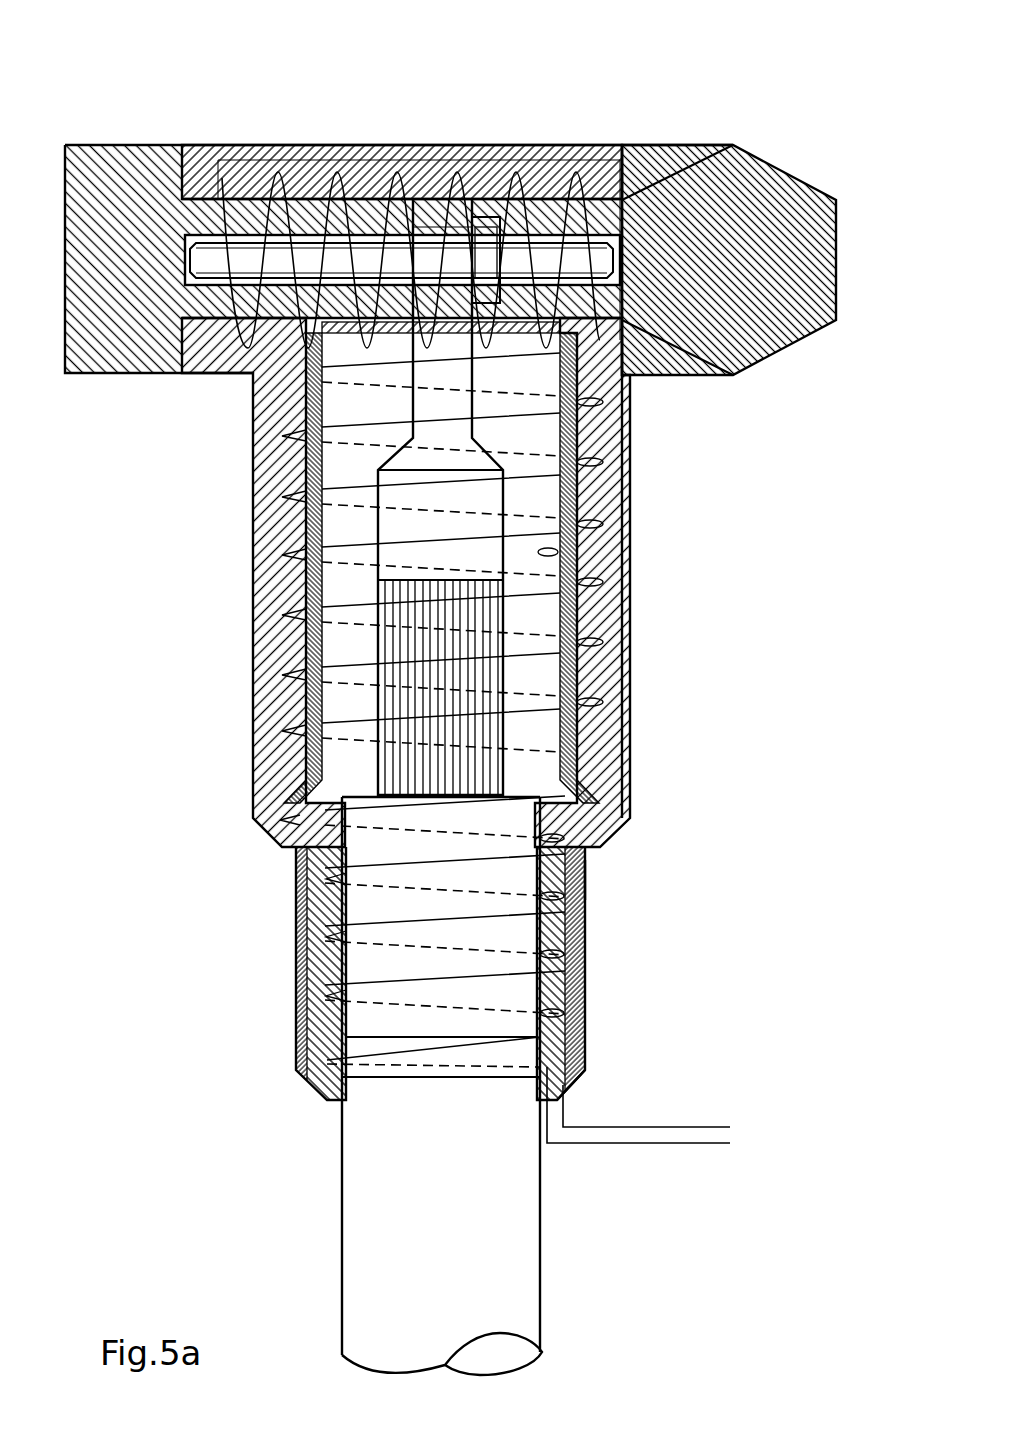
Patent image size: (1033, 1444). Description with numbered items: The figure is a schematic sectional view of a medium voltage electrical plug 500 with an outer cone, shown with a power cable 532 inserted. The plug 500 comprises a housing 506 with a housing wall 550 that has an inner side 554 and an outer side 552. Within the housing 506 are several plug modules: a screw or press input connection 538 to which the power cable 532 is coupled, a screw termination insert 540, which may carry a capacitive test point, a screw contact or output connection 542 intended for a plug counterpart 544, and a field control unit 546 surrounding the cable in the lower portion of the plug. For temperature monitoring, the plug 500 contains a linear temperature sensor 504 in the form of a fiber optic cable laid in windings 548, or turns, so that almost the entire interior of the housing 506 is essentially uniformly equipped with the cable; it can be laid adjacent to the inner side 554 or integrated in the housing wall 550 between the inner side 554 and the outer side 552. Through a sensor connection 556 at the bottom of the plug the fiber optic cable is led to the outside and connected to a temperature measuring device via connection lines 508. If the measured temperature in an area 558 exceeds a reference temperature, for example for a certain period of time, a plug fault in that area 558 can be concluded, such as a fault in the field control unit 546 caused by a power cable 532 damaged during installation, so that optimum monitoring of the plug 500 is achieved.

The electrical plug 500 is at (92, 84).
The linear temperature sensor 504 is at (300, 988).
The housing 506 is at (612, 735).
The connection lines 508 is at (713, 1143).
The power cable 532 is at (525, 1243).
The screw or press input connection 538 is at (480, 497).
The screw termination insert 540 is at (778, 188).
The screw contact or output connection 542 is at (245, 255).
The plug counterpart 544 is at (118, 358).
The field control unit 546 is at (555, 938).
The windings 548 is at (310, 740).
The housing wall 550 is at (602, 663).
The outer side 552 is at (628, 600).
The inner side 554 is at (556, 550).
The sensor connection 556 is at (596, 1095).
The area 558 is at (600, 880).